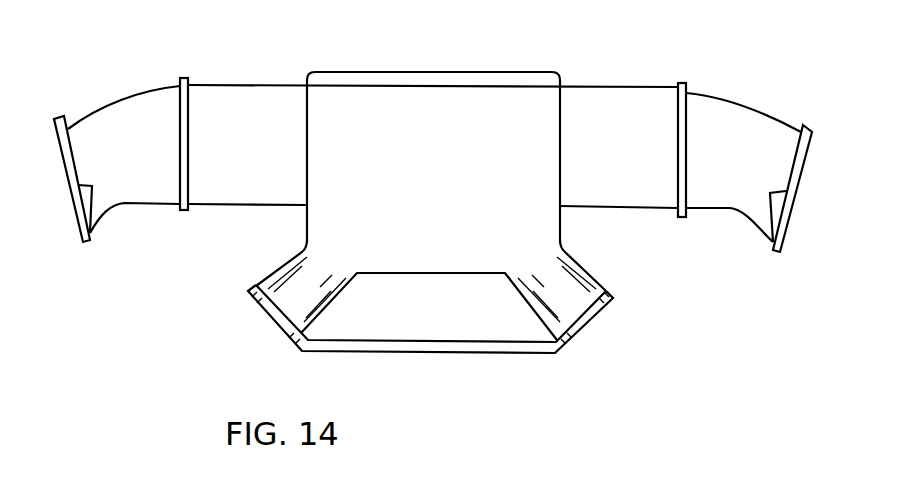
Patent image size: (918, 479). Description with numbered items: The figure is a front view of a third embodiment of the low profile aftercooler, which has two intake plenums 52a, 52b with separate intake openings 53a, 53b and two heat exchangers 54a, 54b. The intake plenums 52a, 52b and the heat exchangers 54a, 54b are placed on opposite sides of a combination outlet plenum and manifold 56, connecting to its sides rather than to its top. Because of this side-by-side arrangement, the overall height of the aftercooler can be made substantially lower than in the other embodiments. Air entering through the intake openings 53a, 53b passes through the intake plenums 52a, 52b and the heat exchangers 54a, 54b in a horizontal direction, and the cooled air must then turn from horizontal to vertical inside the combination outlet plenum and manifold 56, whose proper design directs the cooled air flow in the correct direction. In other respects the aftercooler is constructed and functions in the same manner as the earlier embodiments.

The intake plenum 52a is at (127, 127).
The intake plenum 52b is at (753, 132).
The intake opening 53a is at (84, 212).
The intake opening 53b is at (780, 222).
The heat exchanger 54a is at (235, 100).
The heat exchanger 54b is at (632, 107).
The combination outlet plenum and manifold 56 is at (460, 103).